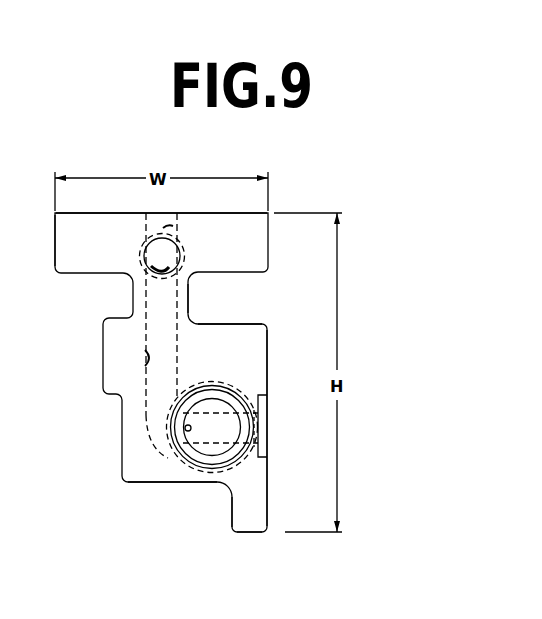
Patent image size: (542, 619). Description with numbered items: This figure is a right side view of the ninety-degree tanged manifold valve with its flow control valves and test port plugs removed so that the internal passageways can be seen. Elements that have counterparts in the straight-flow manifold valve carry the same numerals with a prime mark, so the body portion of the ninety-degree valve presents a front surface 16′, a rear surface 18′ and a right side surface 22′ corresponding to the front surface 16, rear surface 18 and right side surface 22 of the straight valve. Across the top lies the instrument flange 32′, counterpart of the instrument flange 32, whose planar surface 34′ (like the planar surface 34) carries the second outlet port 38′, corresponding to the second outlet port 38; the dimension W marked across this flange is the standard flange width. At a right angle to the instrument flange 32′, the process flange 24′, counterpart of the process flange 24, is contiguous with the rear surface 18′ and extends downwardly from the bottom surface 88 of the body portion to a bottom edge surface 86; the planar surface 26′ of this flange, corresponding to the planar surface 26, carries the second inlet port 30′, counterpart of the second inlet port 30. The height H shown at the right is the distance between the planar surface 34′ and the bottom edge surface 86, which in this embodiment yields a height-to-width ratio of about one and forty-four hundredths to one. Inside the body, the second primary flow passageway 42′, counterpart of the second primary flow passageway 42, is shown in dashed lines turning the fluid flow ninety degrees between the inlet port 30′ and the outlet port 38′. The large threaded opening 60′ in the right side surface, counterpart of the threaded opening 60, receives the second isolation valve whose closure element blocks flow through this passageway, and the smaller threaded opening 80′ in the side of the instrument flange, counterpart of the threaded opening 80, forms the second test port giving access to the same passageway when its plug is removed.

The front surface 16 is at (158, 372).
The instrument flange 32 is at (41, 240).
The planar surface 34 is at (184, 181).
The second outlet port 38 is at (189, 303).
The threaded opening 80 is at (136, 268).
The rear surface 18 is at (230, 307).
The second primary flow passageway 42 is at (103, 344).
The right side surface 22 is at (210, 327).
The planar surface 26 is at (295, 428).
The second inlet port 30 is at (253, 426).
The threaded opening 60 is at (246, 433).
The bottom surface 88 is at (188, 482).
The process flange 24 is at (211, 528).
The bottom edge surface 86 is at (253, 532).
The front surface 16′ is at (102, 375).
The instrument flange 32′ is at (72, 242).
The planar surface 34′ is at (248, 213).
The second outlet port 38′ is at (167, 222).
The threaded opening 80′ is at (157, 267).
The rear surface 18′ is at (226, 324).
The second primary flow passageway 42′ is at (140, 352).
The right side surface 22′ is at (210, 327).
The planar surface 26′ is at (267, 345).
The second inlet port 30′ is at (268, 436).
The threaded opening 60′ is at (205, 458).
The process flange 24′ is at (253, 507).